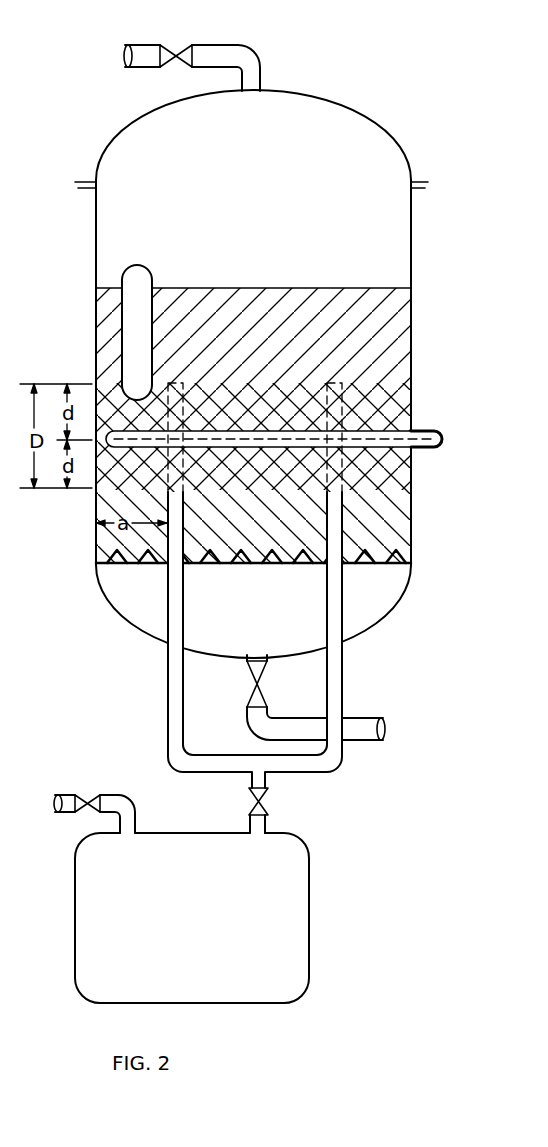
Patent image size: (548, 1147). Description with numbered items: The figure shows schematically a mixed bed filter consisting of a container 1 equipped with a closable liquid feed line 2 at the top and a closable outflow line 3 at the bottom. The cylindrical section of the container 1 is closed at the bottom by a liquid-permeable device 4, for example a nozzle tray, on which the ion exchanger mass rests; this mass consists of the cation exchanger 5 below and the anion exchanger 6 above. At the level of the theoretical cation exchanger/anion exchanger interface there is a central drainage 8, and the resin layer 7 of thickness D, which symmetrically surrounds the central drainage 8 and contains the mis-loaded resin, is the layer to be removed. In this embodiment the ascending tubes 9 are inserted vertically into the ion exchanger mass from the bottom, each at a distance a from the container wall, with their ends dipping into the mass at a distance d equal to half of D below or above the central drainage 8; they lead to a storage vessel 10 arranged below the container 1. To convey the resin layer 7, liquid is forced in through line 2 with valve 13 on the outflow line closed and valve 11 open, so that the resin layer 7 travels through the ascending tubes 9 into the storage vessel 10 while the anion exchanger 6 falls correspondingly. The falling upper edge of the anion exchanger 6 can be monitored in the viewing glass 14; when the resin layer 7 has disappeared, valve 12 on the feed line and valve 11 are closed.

The container 1 is at (412, 217).
The liquid feed line 2 is at (245, 56).
The liquid outflow line 3 is at (247, 665).
The liquid-permeable device 4 is at (412, 551).
The cation exchanger 5 is at (388, 513).
The anion exchanger 6 is at (385, 312).
The resin layer 7 is at (395, 400).
The central drainage 8 is at (432, 447).
The ascending tubes 9 is at (168, 676).
The storage vessel 10 is at (293, 876).
The valve 11 is at (268, 807).
The valve 12 is at (182, 50).
The valve 13 is at (263, 695).
The viewing glass 14 is at (130, 279).